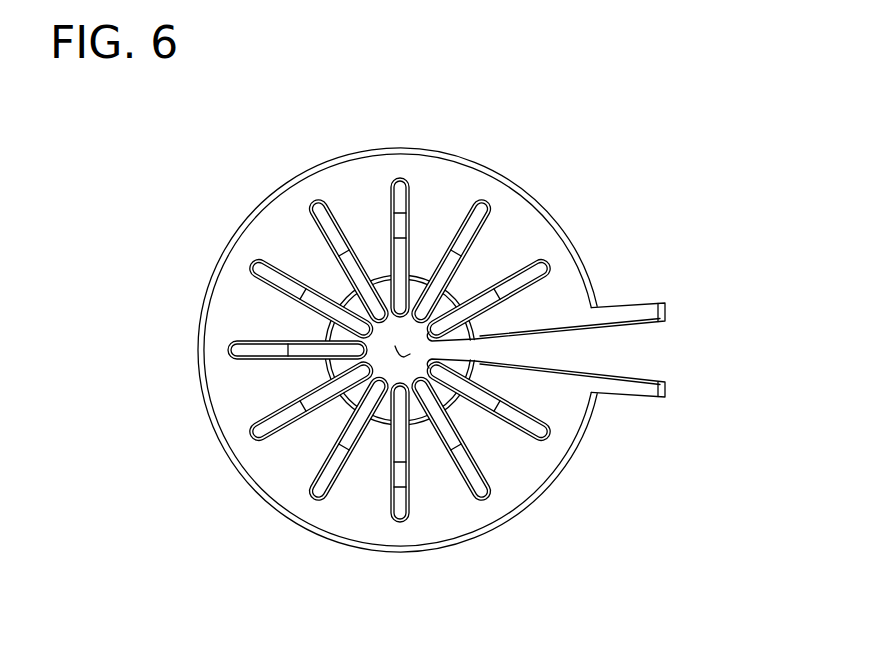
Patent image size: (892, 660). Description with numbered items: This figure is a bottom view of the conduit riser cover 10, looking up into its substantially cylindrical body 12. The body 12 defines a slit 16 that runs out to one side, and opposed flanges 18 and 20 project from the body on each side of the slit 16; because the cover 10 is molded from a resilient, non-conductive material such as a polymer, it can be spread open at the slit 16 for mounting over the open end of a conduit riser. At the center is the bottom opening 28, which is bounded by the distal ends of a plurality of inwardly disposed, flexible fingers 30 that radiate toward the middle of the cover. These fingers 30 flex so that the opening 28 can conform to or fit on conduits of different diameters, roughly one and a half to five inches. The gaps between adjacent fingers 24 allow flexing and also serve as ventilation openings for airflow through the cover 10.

The conduit riser cover 10 is at (412, 338).
The cylindrical body 12 is at (486, 160).
The slit 16 is at (634, 352).
The flange 18 is at (633, 391).
The flange 20 is at (630, 308).
The fingers 24 is at (355, 312).
The bottom opening 28 is at (405, 342).
The fingers 30 is at (372, 250).